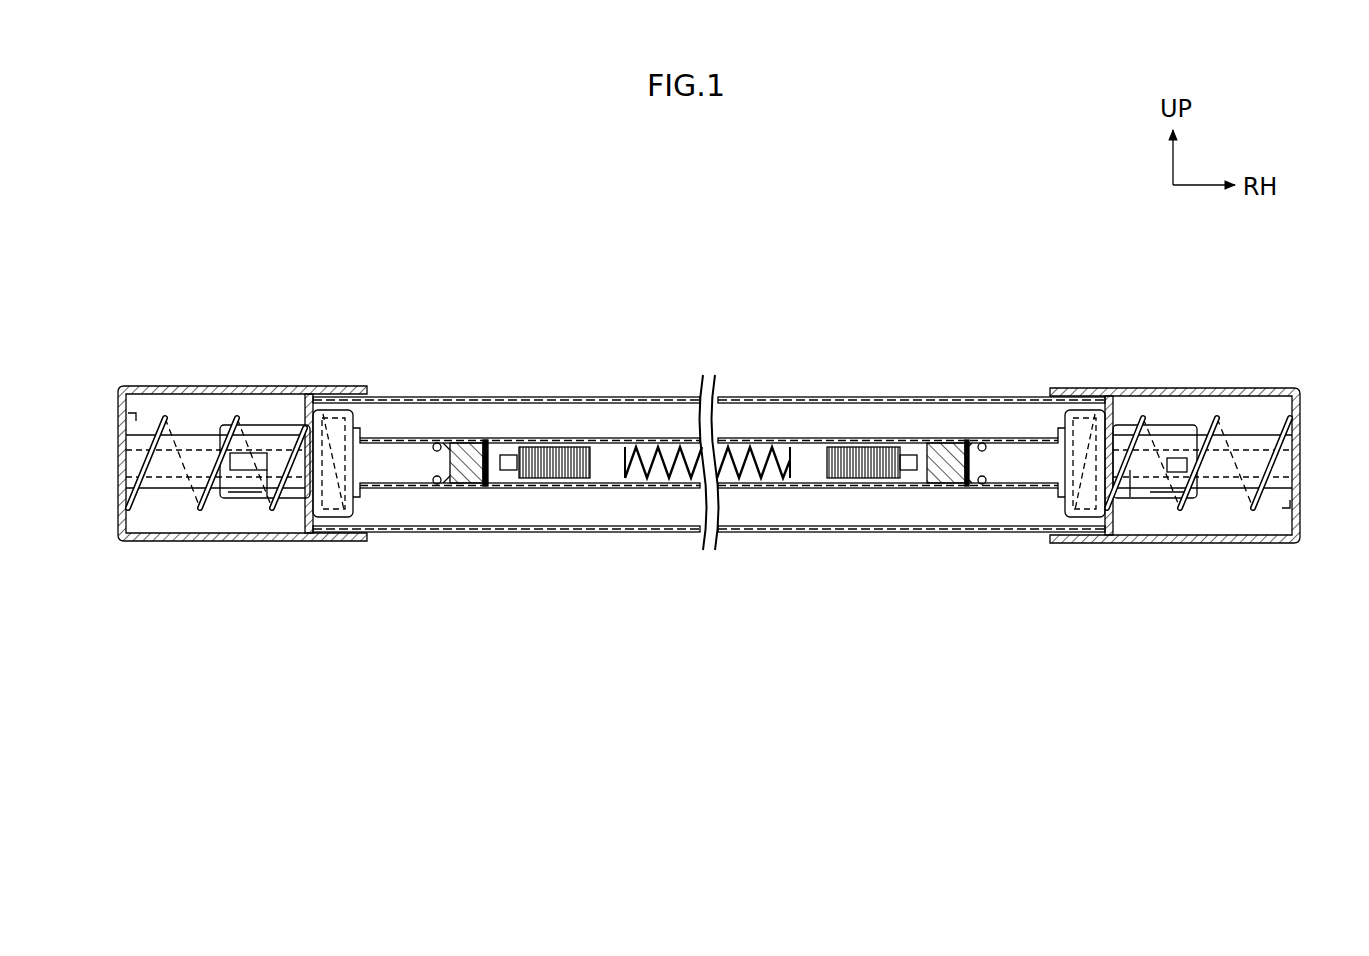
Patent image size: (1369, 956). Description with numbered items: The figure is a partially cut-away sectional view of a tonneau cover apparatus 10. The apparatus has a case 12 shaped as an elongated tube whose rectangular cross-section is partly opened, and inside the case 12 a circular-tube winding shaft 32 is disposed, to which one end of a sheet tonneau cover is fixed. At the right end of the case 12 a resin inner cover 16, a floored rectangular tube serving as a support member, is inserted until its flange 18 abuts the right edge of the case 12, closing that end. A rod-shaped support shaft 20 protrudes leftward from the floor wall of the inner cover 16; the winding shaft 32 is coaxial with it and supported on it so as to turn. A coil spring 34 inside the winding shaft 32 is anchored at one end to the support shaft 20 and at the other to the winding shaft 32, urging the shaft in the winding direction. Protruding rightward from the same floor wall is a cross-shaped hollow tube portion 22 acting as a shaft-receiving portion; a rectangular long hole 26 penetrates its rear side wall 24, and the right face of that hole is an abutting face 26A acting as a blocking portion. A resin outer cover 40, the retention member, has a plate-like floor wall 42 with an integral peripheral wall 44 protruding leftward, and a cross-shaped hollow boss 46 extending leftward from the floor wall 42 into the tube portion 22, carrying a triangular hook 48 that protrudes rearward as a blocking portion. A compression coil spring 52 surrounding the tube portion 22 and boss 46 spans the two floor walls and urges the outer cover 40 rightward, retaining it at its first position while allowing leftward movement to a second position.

The tonneau cover apparatus 10 is at (722, 290).
The case 12 is at (922, 398).
The inner cover 16 is at (368, 420).
The flange 18 is at (312, 398).
The support shaft 20 is at (400, 476).
The tube portion 22 is at (295, 498).
The rear side wall 24 is at (1140, 492).
The long hole 26 is at (285, 497).
The abutting face 26A is at (243, 492).
The winding shaft 32 is at (843, 489).
The coil spring 34 is at (760, 489).
The outer cover 40 is at (134, 380).
The floor wall 42 is at (118, 434).
The peripheral wall 44 is at (228, 386).
The boss 46 is at (190, 420).
The hook 48 is at (272, 425).
The compression coil spring 52 is at (203, 498).